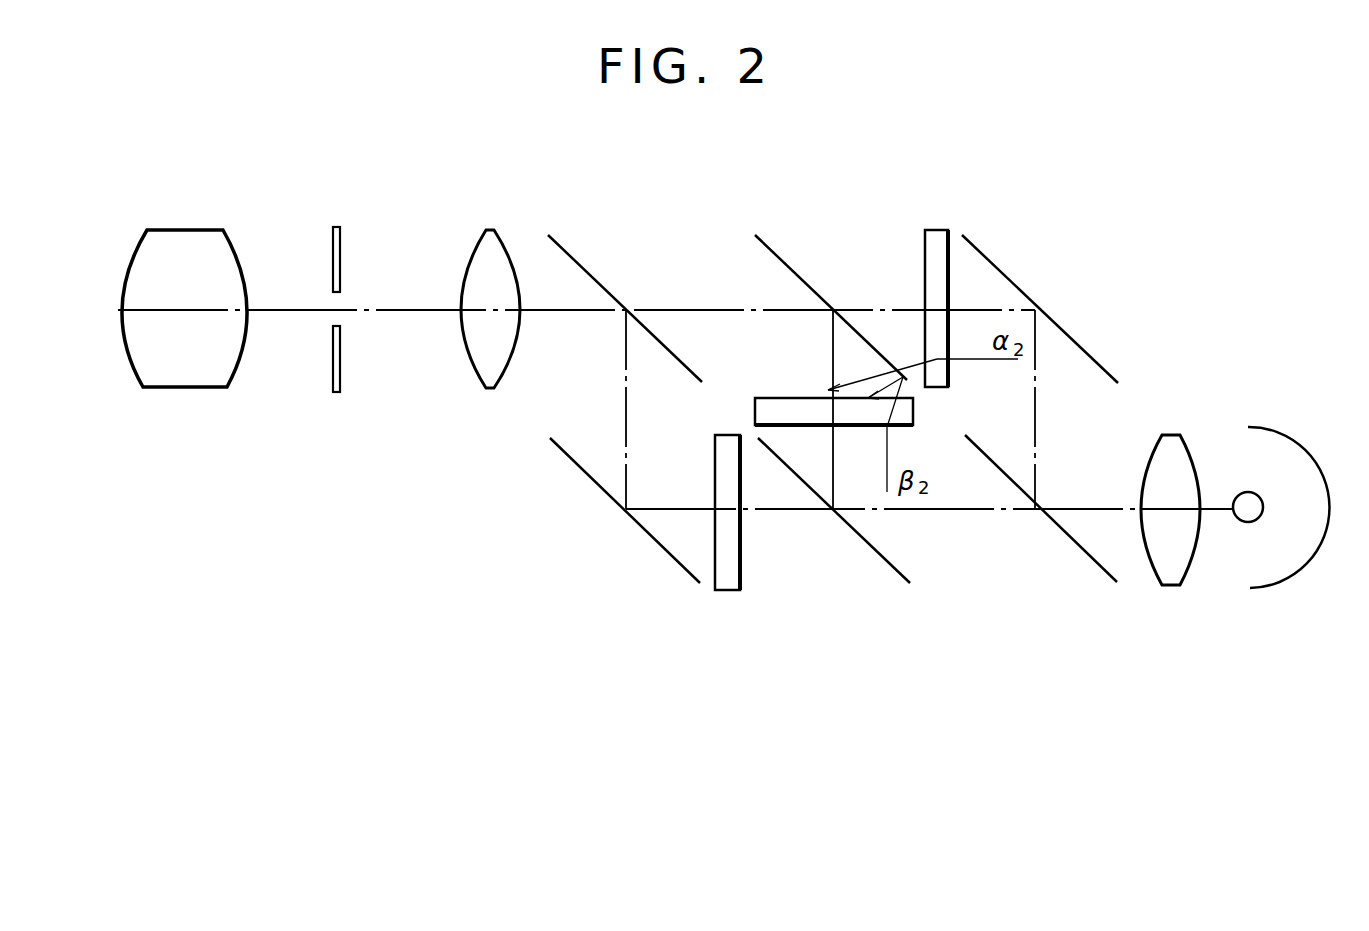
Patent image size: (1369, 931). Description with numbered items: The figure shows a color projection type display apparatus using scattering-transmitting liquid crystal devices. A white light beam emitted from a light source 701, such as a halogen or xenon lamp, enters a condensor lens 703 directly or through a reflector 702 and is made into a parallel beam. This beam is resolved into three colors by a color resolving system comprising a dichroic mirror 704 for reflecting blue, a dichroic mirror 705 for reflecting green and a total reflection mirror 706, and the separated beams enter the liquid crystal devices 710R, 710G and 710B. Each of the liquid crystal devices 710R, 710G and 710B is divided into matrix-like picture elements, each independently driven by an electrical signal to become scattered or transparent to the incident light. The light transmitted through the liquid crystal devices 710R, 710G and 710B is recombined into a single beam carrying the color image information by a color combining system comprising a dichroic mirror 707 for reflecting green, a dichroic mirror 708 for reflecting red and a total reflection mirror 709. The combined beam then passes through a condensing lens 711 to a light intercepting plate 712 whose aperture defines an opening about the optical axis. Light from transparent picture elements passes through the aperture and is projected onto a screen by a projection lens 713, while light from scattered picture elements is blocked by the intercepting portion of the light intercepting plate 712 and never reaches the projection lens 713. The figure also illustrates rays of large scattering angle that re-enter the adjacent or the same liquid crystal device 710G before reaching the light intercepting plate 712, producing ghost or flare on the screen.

The light source 701 is at (1245, 522).
The reflector 702 is at (1280, 430).
The condensor lens 703 is at (1168, 432).
The dichroic mirror for reflecting blue 704 is at (1087, 557).
The dichroic mirror for reflecting green 705 is at (895, 570).
The total reflection mirror 706 is at (993, 258).
The dichroic mirror for reflecting green 707 is at (763, 240).
The dichroic mirror for reflecting red 708 is at (560, 242).
The total reflection mirror 709 is at (650, 535).
The liquid crystal device 710R is at (730, 590).
The liquid crystal device 710G is at (767, 397).
The liquid crystal device 710B is at (937, 230).
The condensing lens 711 is at (492, 388).
The light intercepting plate 712 is at (335, 392).
The projection lens 713 is at (170, 388).